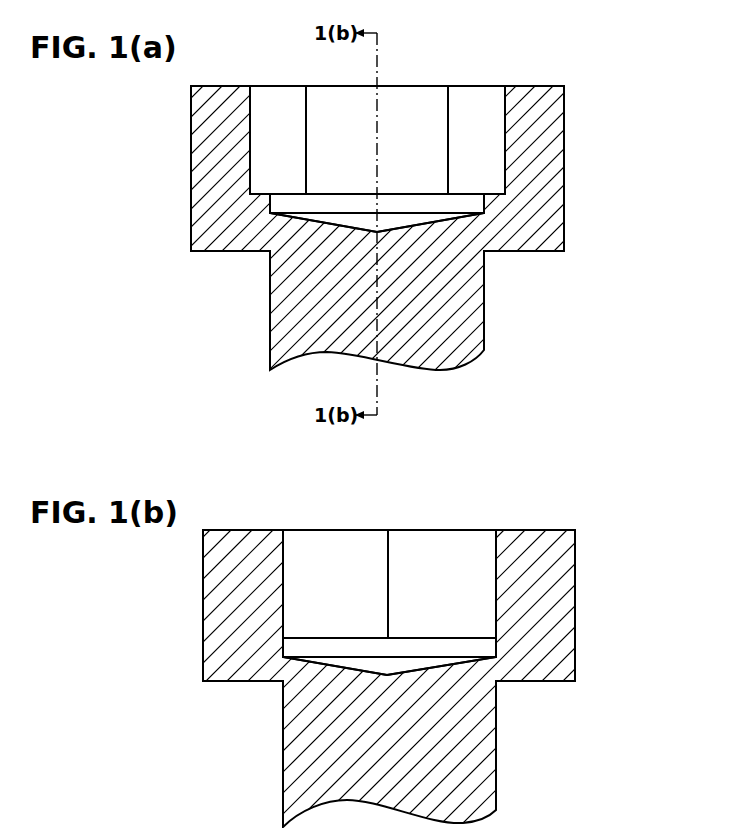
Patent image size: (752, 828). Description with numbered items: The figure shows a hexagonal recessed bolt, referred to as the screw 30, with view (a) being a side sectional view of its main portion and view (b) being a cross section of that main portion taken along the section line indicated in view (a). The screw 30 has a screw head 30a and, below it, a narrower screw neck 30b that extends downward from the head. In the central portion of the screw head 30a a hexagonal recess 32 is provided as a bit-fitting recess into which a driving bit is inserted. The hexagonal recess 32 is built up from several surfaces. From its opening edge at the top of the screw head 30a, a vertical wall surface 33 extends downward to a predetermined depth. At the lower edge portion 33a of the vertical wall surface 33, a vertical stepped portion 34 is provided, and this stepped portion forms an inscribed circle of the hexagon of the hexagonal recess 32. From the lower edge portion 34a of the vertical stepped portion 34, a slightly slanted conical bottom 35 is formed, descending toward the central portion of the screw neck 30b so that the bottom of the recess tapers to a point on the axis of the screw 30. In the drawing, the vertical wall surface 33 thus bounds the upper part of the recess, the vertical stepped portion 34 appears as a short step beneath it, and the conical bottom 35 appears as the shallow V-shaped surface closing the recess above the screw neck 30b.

In FIG. 1A, the screw 30 is at (570, 85).
In FIG. 1B, the screw 30 is at (461, 529).
In FIG. 1A, the screw head 30a is at (533, 141).
In FIG. 1B, the screw head 30a is at (389, 679).
In FIG. 1A, the screw neck 30b is at (320, 302).
In FIG. 1B, the screw neck 30b is at (338, 740).
In FIG. 1A, the hexagonal recess 32 is at (283, 108).
In FIG. 1B, the hexagonal recess 32 is at (293, 555).
In FIG. 1A, the vertical wall surface 33 is at (418, 108).
In FIG. 1B, the vertical wall surface 33 is at (355, 545).
In FIG. 1A, the lower edge portion of the vertical wall surface 33a is at (256, 193).
In FIG. 1B, the lower edge portion of the vertical wall surface 33a is at (215, 608).
In FIG. 1A, the vertical stepped portion 34 is at (472, 203).
In FIG. 1B, the vertical stepped portion 34 is at (293, 644).
In FIG. 1A, the lower edge portion of the vertical stepped portion 34a is at (270, 205).
In FIG. 1A, the conical bottom 35 is at (385, 223).
In FIG. 1B, the conical bottom 35 is at (395, 668).